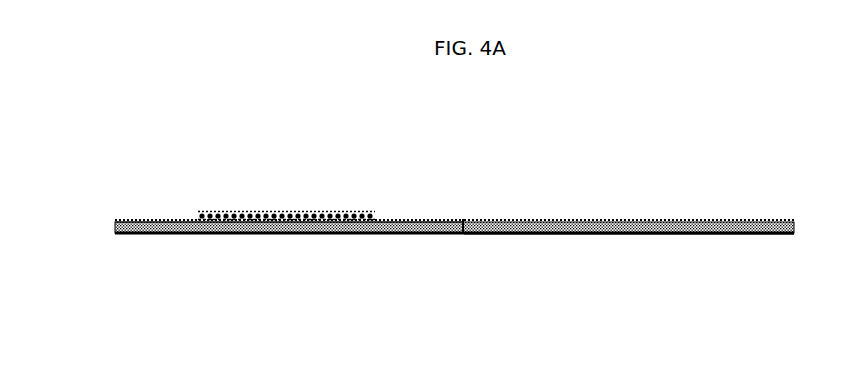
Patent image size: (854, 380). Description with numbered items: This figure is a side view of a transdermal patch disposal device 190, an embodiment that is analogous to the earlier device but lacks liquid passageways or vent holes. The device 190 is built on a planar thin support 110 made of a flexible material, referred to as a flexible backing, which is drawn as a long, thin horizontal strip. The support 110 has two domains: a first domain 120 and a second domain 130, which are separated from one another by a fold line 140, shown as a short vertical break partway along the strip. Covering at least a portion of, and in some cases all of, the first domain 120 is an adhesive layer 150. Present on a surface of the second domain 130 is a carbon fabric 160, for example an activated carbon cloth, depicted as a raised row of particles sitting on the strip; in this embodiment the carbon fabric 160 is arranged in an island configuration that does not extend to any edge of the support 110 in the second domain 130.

The planar thin support 110 is at (672, 240).
The first domain 120 is at (567, 222).
The second domain 130 is at (132, 213).
The fold line 140 is at (463, 220).
The adhesive layer 150 is at (172, 218).
The carbon fabric 160 is at (353, 213).
The device 190 is at (552, 242).